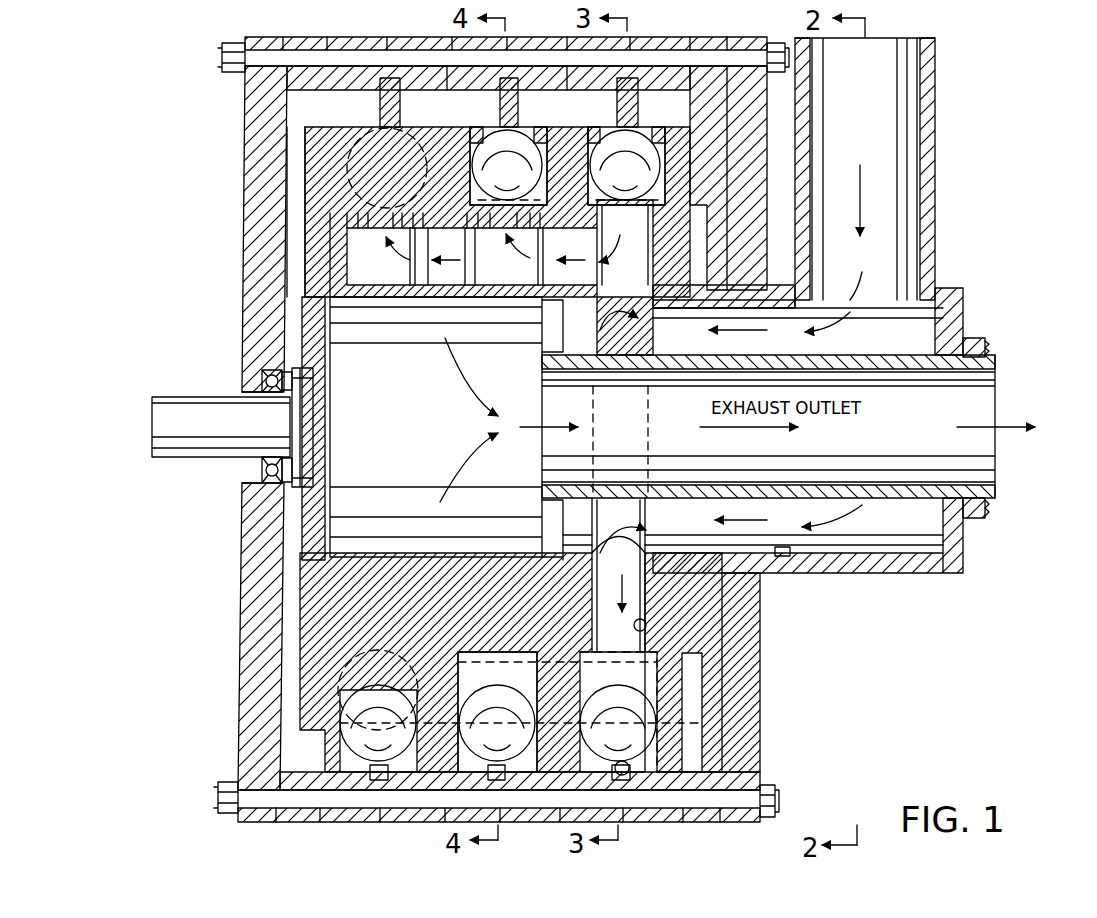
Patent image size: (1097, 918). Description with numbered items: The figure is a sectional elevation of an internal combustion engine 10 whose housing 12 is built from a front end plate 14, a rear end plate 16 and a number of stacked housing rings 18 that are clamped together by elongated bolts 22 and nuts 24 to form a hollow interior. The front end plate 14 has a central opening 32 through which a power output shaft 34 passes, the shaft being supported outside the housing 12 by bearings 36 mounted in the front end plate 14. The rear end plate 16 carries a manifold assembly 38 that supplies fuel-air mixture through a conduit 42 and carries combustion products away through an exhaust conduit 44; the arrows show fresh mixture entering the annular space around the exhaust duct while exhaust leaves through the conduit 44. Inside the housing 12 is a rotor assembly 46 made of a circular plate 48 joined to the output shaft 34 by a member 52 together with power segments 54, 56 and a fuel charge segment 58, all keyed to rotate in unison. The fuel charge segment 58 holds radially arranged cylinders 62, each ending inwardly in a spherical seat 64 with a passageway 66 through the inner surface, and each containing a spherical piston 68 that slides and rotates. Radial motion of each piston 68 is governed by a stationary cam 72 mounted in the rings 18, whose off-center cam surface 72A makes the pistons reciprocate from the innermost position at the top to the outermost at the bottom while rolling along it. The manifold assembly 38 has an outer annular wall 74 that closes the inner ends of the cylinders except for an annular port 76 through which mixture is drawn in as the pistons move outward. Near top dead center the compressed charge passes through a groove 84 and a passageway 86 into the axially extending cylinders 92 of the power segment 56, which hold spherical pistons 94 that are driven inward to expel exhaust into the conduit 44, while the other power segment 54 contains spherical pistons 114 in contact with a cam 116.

The internal combustion engine 10 is at (140, 215).
The housing 12 is at (237, 650).
The front end plate 14 is at (245, 300).
The rear end plate 16 is at (760, 662).
The housing rings 18 is at (700, 822).
The bolts 22 is at (222, 790).
The nuts 24 is at (778, 790).
The central opening 32 is at (262, 468).
The power output shaft 34 is at (222, 397).
The bearings 36 is at (784, 557).
The manifold assembly 38 is at (905, 573).
The conduit 42 is at (935, 113).
The conduit 44 is at (990, 506).
The rotor assembly 46 is at (300, 137).
The circular plate 48 is at (302, 218).
The member 52 is at (296, 490).
The power segment 54 is at (440, 127).
The power segment 56 is at (594, 138).
The fuel charge segment 58 is at (662, 130).
The cylinders 62 is at (562, 725).
The spherical seat 64 is at (665, 672).
The passageway 66 is at (660, 700).
The spherical piston 68 is at (657, 726).
The stationary cam 72 is at (618, 127).
The cam surface 72A is at (628, 776).
The outer annular wall 74 is at (650, 600).
The port 76 is at (650, 630).
The groove 84 is at (725, 262).
The passageway 86 is at (563, 289).
The cylinders 92 is at (472, 127).
The spherical pistons 94 is at (485, 700).
The spherical pistons 114 is at (345, 740).
The cam 116 is at (460, 738).